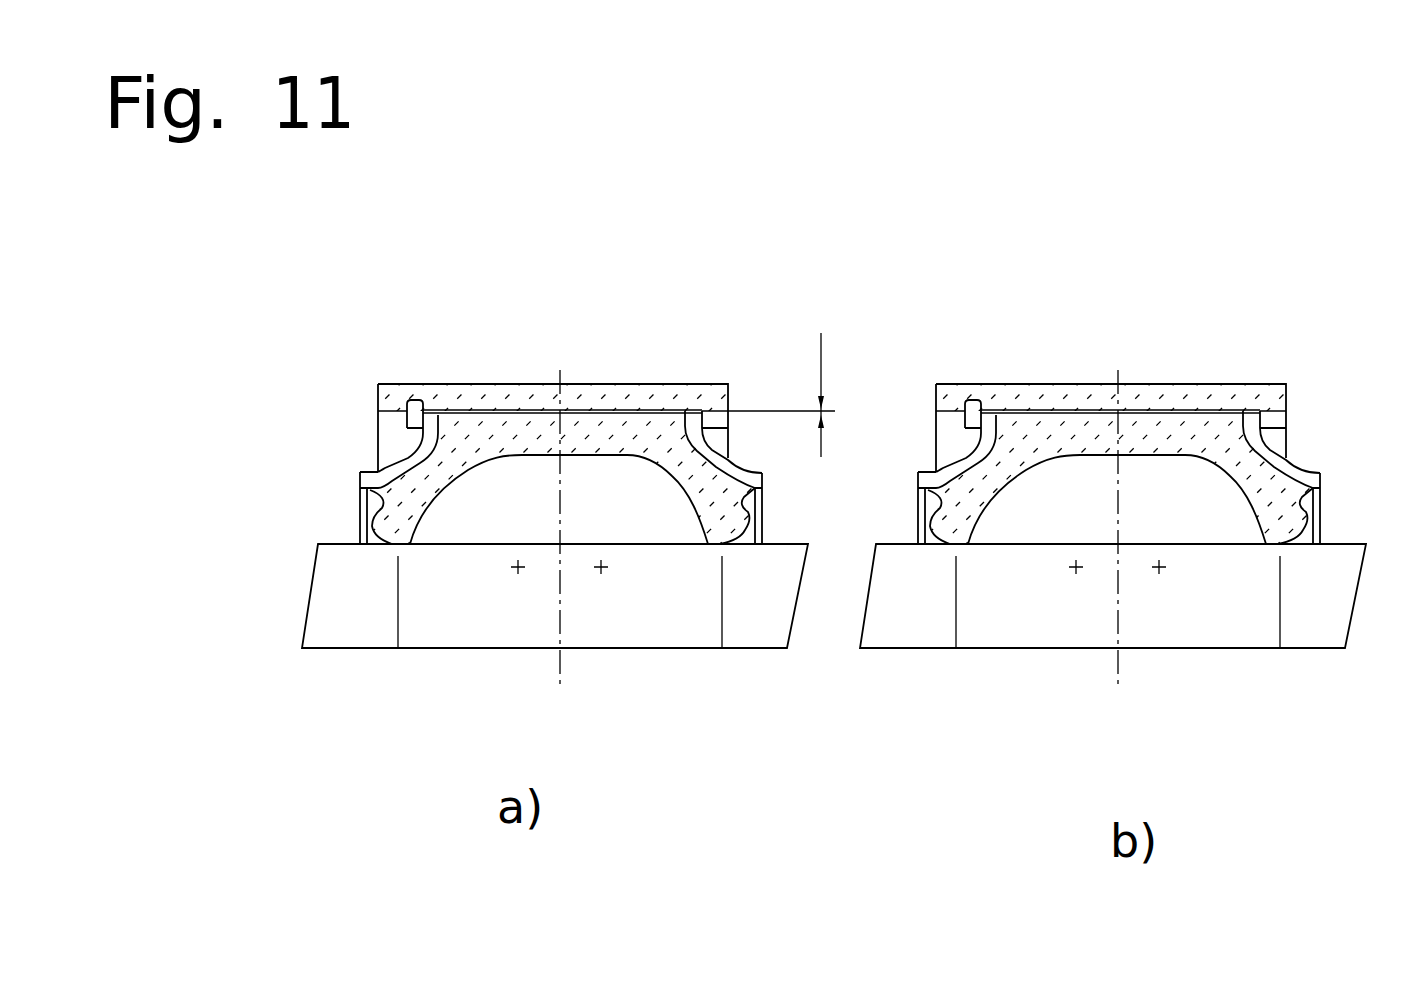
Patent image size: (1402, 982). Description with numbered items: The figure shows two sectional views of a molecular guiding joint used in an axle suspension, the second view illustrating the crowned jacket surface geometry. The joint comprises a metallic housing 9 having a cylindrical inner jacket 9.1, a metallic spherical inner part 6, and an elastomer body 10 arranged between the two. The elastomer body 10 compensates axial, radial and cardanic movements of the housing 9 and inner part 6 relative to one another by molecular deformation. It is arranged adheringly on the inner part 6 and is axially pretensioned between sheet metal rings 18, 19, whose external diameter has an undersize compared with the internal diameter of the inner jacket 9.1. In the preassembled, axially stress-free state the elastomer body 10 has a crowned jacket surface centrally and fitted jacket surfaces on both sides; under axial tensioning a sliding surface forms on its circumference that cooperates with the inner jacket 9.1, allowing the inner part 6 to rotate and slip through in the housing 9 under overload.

In FIG. 11A, the metallic housing 9 is at (467, 403).
In FIG. 11A, the cylindrical inner jacket 9.1 is at (622, 413).
In FIG. 11A, the elastomer body 10 is at (407, 507).
In FIG. 11A, the spherical inner part 6 is at (486, 491).
In FIG. 11B, the sheet metal ring 18 is at (1001, 319).
In FIG. 11B, the sheet metal ring 19 is at (1237, 321).